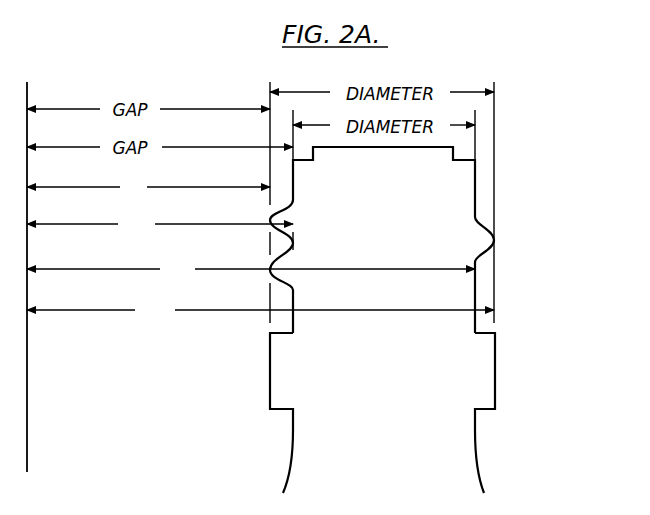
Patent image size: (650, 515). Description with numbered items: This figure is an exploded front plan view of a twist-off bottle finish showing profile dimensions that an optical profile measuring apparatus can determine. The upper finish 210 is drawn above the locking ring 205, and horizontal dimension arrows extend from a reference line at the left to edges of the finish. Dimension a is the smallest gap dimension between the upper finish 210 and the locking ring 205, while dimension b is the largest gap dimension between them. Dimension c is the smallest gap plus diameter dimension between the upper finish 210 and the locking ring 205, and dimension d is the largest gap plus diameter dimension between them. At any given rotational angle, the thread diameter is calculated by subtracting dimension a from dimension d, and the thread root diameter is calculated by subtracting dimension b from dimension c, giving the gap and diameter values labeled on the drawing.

The upper finish 210 is at (473, 160).
The locking ring 205 is at (497, 372).
The dimension a is at (148, 187).
The dimension b is at (160, 224).
The dimension c is at (251, 269).
The dimension d is at (260, 310).